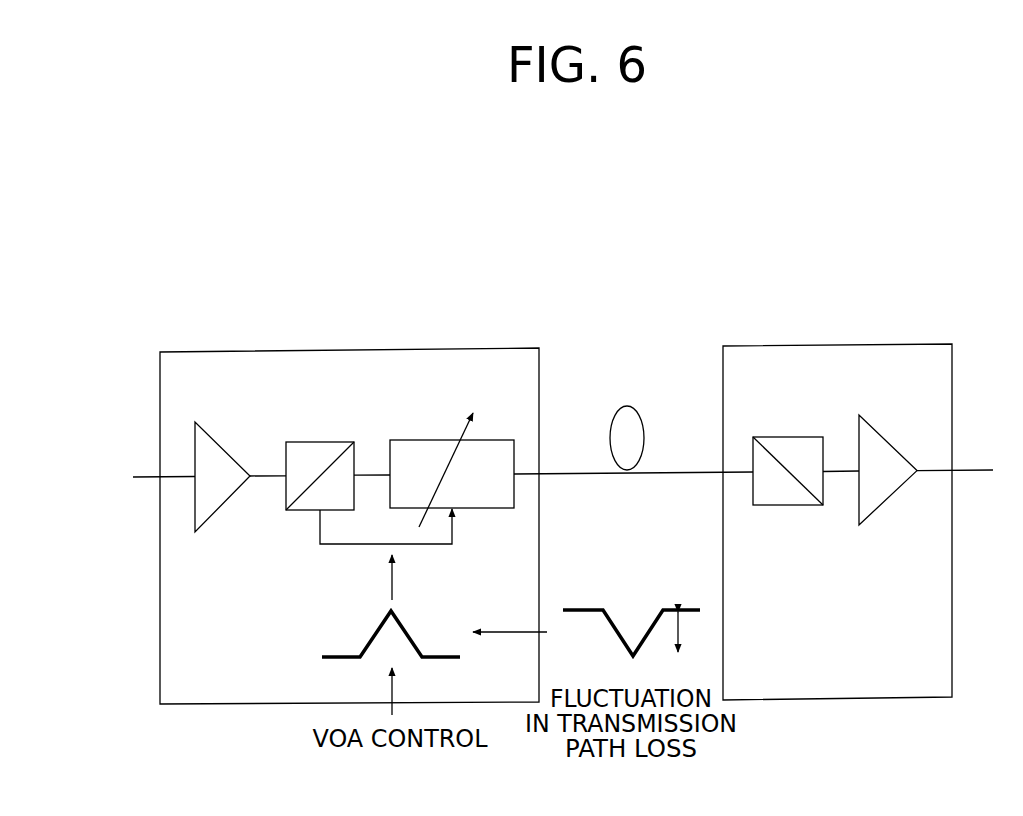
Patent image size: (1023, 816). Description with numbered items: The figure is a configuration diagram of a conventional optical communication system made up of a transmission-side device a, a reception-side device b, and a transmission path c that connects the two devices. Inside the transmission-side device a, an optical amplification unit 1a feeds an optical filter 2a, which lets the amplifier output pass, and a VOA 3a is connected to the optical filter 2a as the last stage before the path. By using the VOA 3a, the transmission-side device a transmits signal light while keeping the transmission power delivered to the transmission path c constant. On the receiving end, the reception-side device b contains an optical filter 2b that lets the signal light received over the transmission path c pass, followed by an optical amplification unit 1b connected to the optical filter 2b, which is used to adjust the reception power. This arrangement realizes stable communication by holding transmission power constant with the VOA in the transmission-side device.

The transmission-side device a is at (340, 348).
The reception-side device b is at (827, 345).
The transmission path c is at (628, 408).
The optical amplification unit 1a is at (232, 457).
The optical filter 2a is at (297, 512).
The VOA 3a is at (488, 510).
The optical amplification unit 1b is at (888, 500).
The optical filter 2b is at (773, 507).